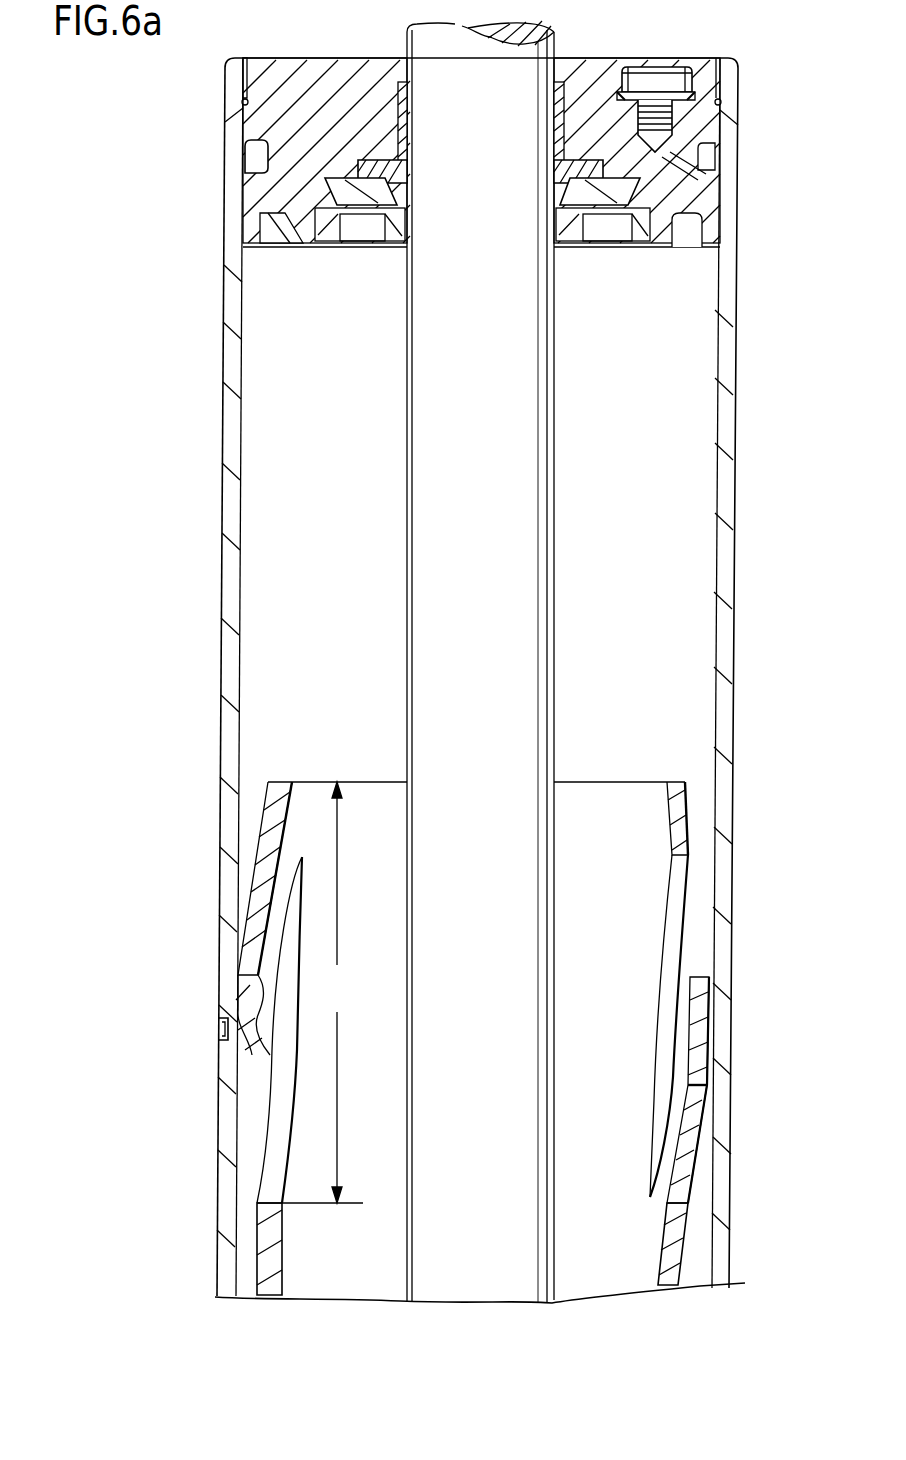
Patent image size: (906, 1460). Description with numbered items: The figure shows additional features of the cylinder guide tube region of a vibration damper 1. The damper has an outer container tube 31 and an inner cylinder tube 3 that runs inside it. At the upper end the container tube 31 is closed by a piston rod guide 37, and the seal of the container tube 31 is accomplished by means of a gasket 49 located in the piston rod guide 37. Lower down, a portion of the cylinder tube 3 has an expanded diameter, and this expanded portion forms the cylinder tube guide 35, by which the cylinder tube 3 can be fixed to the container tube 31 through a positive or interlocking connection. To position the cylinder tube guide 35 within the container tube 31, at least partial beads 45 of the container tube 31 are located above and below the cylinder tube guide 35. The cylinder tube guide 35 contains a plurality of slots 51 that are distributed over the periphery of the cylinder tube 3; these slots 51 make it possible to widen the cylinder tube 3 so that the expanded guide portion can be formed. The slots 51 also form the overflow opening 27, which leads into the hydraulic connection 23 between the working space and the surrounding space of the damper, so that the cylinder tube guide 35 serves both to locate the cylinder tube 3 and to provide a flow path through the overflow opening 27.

The vibration damper 1 is at (185, 620).
The cylinder tube 3 is at (262, 1268).
The hydraulic connection 23 is at (700, 1245).
The overflow opening 27 is at (700, 805).
The container tube 31 is at (224, 412).
The cylinder tube guide 35 is at (310, 992).
The piston rod guide 37 is at (300, 179).
The bead 45 is at (216, 1030).
The gasket 49 is at (255, 153).
The slots 51 is at (264, 888).